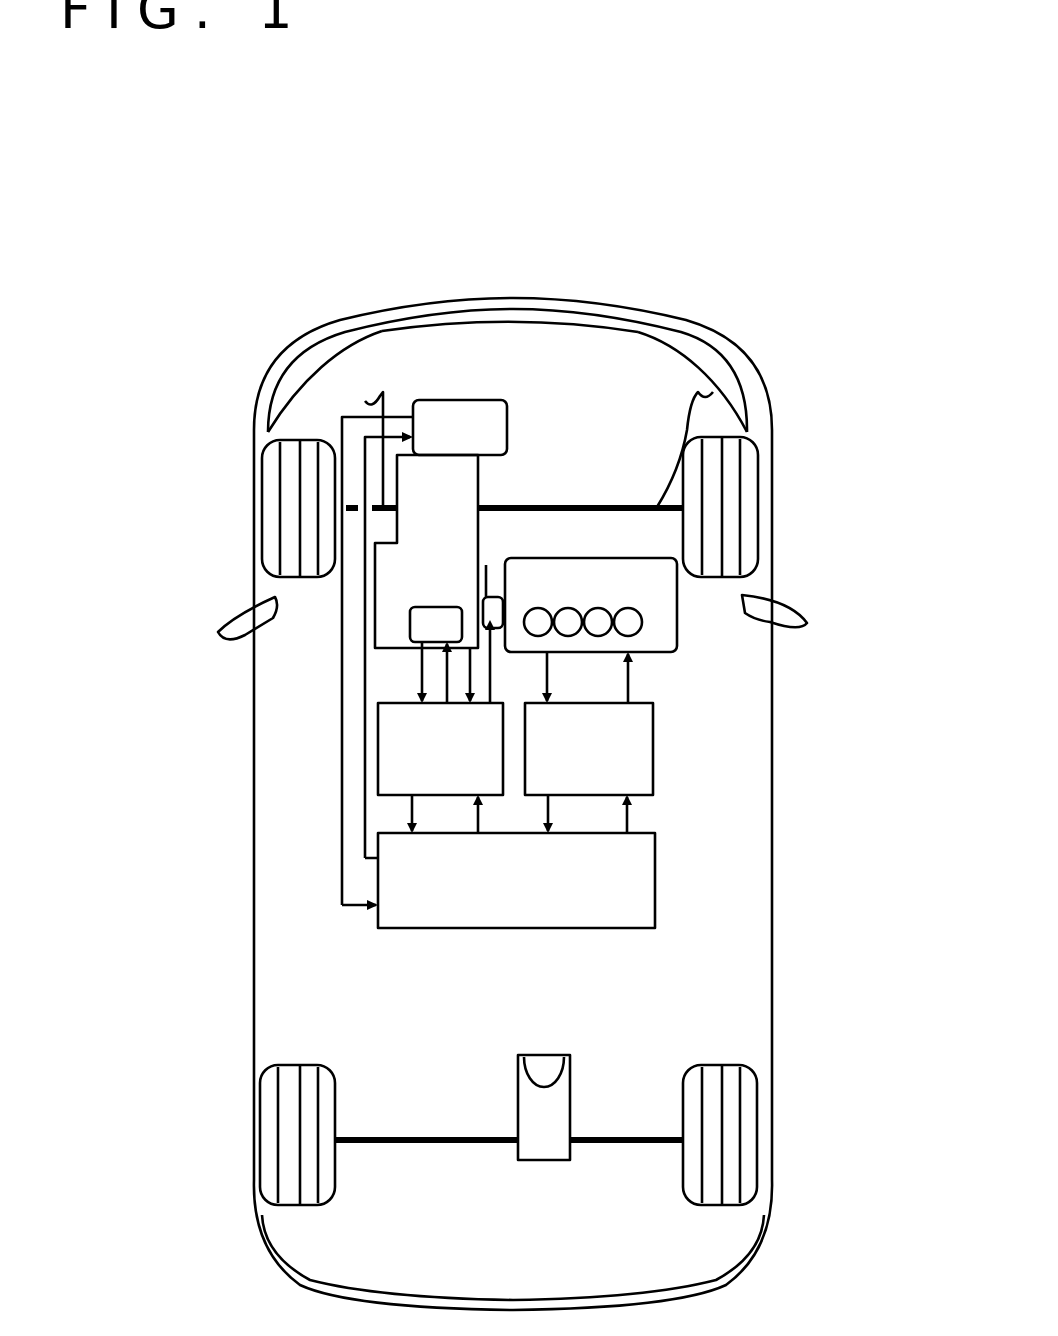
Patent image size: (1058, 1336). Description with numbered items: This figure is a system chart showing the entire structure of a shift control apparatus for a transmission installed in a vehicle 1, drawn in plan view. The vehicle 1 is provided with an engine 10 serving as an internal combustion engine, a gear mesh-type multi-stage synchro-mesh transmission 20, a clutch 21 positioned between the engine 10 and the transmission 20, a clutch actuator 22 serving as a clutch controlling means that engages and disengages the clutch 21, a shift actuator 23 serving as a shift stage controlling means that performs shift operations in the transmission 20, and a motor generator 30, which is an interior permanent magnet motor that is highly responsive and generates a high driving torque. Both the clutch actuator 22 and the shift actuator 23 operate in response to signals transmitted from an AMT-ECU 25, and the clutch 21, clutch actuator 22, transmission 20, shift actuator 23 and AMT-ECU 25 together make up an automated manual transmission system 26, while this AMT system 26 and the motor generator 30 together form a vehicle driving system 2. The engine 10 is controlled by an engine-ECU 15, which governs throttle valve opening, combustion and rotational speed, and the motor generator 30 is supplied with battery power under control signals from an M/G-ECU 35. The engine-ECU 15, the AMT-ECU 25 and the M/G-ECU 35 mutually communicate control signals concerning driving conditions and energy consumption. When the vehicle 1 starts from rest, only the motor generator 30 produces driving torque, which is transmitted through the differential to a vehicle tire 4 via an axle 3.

The vehicle 1 is at (768, 240).
The vehicle driving system 2 is at (183, 460).
The axle 3 is at (365, 401).
The vehicle tire 4 is at (290, 488).
The engine 10 is at (657, 608).
The engine-ECU 15 is at (628, 775).
The transmission 20 is at (458, 498).
The clutch 21 is at (497, 580).
The clutch actuator 22 is at (560, 507).
The shift actuator 23 is at (427, 625).
The AMT-ECU 25 is at (390, 755).
The automated manual transmission system 26 is at (298, 681).
The motor generator 30 is at (483, 418).
The M/G-ECU 35 is at (637, 867).